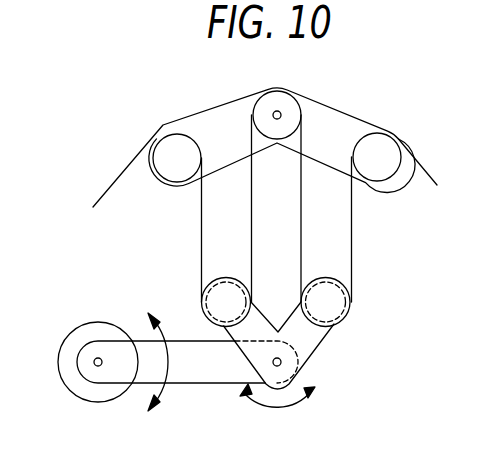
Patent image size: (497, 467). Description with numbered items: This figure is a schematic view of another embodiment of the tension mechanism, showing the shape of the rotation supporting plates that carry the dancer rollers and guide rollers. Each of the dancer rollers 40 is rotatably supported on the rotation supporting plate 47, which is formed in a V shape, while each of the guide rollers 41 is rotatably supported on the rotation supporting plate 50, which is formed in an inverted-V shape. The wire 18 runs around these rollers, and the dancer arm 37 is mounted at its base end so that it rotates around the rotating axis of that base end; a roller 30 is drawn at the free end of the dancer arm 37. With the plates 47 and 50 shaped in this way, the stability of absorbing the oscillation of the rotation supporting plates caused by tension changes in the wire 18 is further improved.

The rotation supporting plate 50 is at (213, 108).
The guide roller 41 is at (167, 148).
The wire 18 is at (352, 242).
The dancer roller 40 is at (220, 307).
The rotation supporting plate 47 is at (311, 357).
The dancer arm 37 is at (193, 384).
The roller 30 is at (70, 333).